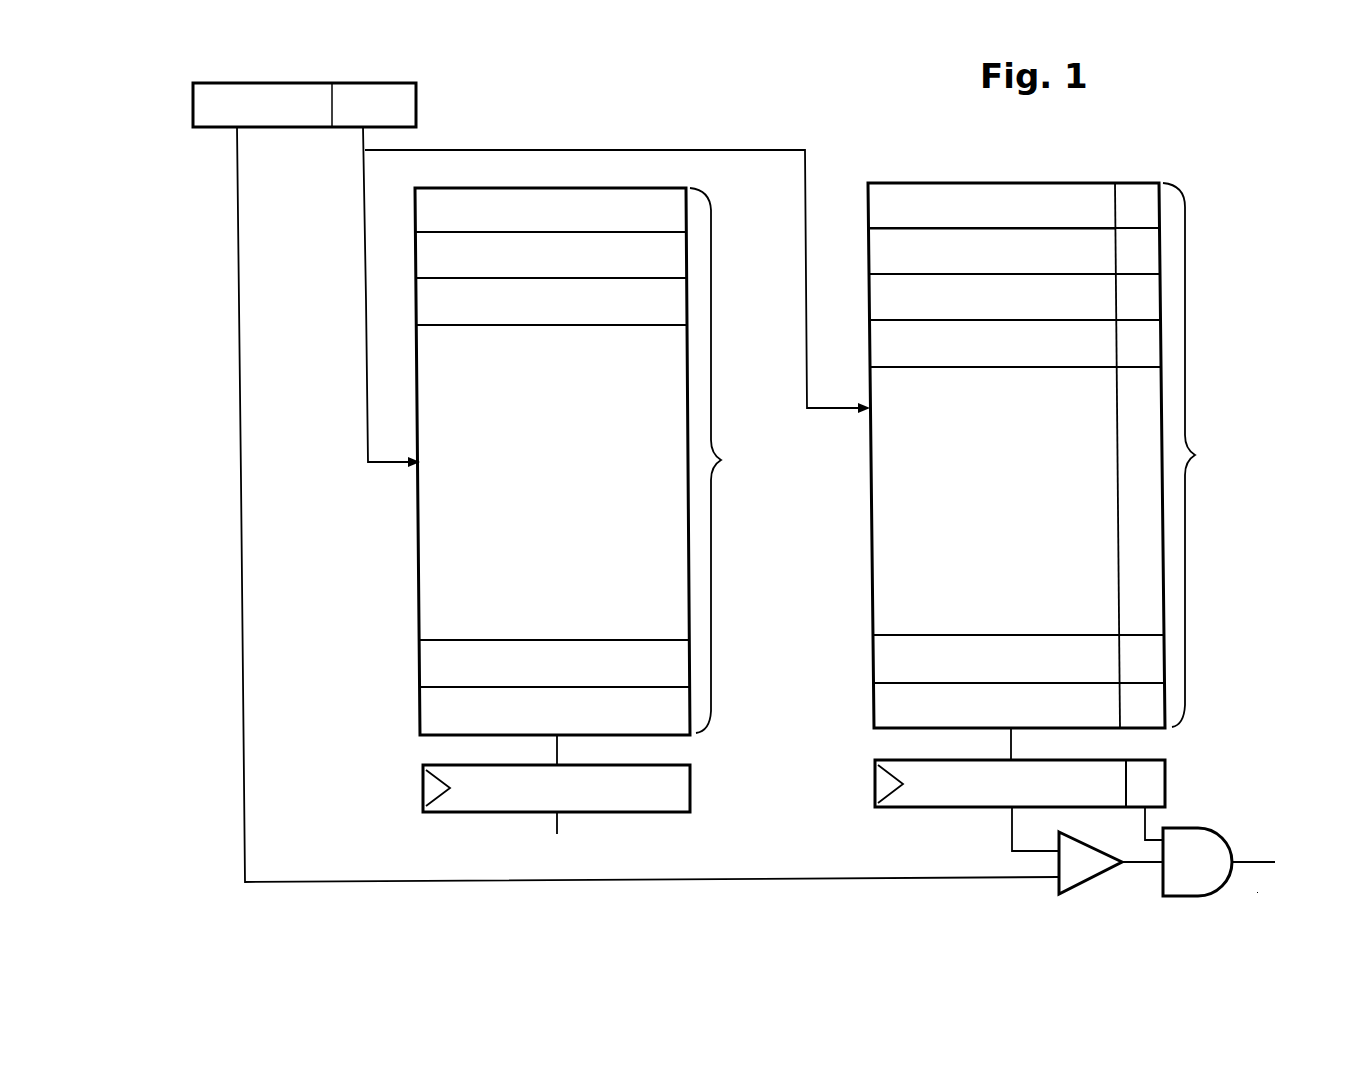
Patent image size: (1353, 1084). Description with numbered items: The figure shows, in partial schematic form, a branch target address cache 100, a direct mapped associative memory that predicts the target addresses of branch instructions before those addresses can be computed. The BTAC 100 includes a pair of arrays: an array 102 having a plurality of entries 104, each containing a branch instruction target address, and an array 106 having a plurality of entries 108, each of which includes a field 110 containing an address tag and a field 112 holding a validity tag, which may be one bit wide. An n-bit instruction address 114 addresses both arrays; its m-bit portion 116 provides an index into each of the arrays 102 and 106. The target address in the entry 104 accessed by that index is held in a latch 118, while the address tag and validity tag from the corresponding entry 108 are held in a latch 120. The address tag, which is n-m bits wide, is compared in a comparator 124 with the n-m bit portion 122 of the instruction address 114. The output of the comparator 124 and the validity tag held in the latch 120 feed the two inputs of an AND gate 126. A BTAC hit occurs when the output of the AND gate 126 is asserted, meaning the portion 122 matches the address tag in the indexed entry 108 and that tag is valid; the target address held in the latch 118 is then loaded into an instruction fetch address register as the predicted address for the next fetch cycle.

The branch target address cache 100 is at (1260, 895).
The array 102 is at (552, 446).
The entries 104 is at (729, 460).
The array 106 is at (1016, 438).
The entries 108 is at (1203, 455).
The field containing an address tag 110 is at (992, 212).
The field holding a validity tag 112 is at (1142, 188).
The instruction address 114 is at (418, 112).
The m-bit portion 116 is at (343, 128).
The latch 118 is at (692, 786).
The latch 120 is at (1167, 780).
The n-m bit portion 122 is at (200, 128).
The comparator 124 is at (1082, 885).
The AND gate 126 is at (1237, 851).